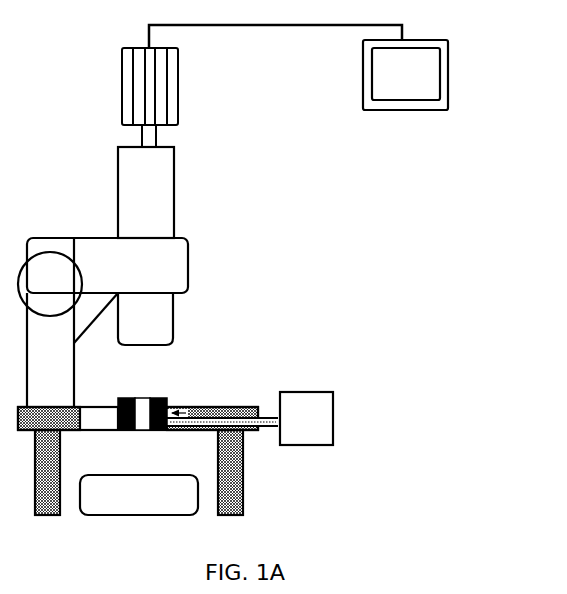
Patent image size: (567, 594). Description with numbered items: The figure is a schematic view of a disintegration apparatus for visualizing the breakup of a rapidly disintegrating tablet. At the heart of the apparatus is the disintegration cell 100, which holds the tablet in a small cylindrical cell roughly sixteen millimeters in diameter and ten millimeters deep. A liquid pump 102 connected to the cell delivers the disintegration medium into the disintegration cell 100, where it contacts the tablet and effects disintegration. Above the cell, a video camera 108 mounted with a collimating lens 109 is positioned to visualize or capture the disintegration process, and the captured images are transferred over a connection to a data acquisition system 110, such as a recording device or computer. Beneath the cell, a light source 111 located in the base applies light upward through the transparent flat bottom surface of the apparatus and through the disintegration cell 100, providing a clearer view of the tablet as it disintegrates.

The video camera 108 is at (163, 63).
The data acquisition system 110 is at (402, 123).
The collimating lens 109 is at (178, 177).
The liquid pump 102 is at (322, 405).
The disintegration cell 100 is at (211, 424).
The light source 111 is at (201, 495).